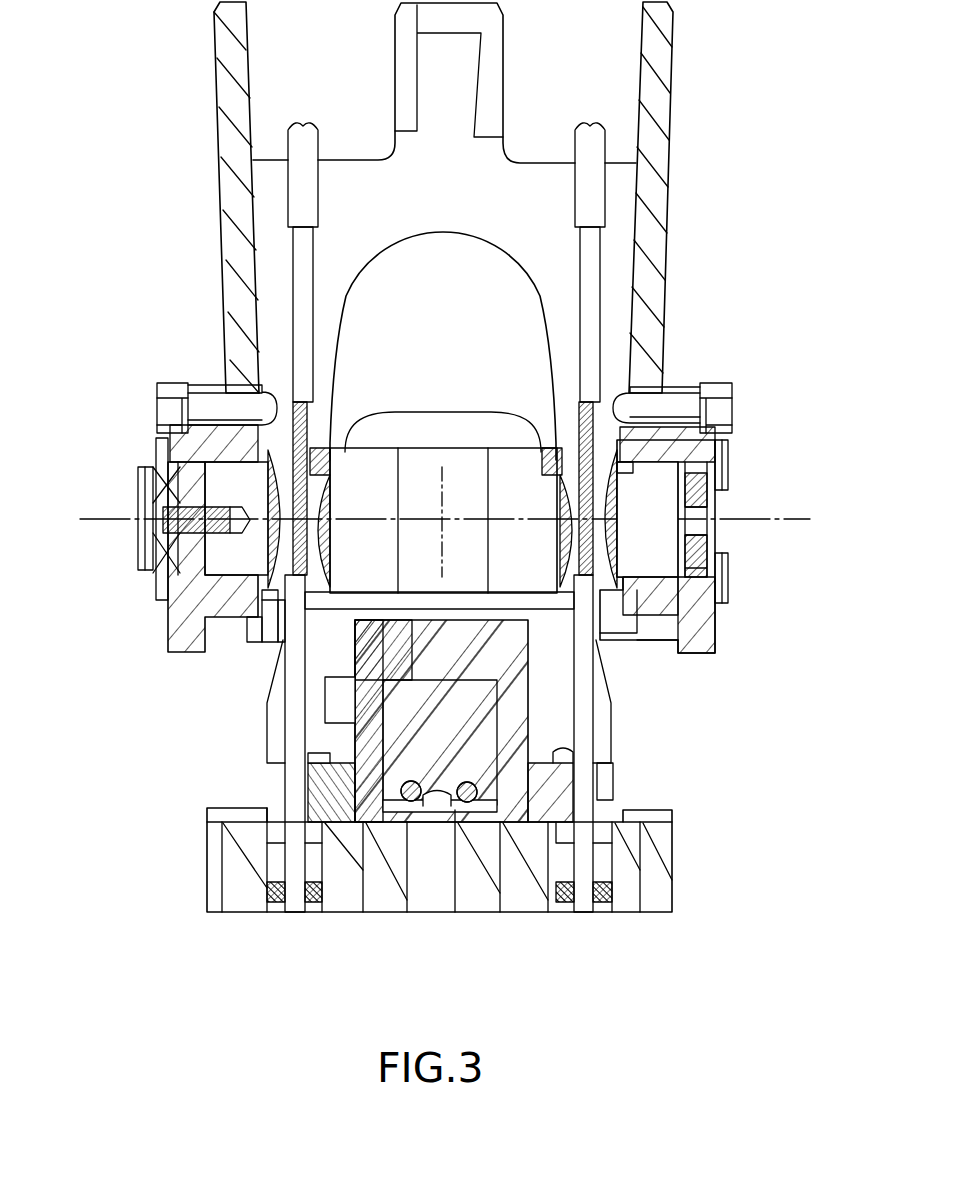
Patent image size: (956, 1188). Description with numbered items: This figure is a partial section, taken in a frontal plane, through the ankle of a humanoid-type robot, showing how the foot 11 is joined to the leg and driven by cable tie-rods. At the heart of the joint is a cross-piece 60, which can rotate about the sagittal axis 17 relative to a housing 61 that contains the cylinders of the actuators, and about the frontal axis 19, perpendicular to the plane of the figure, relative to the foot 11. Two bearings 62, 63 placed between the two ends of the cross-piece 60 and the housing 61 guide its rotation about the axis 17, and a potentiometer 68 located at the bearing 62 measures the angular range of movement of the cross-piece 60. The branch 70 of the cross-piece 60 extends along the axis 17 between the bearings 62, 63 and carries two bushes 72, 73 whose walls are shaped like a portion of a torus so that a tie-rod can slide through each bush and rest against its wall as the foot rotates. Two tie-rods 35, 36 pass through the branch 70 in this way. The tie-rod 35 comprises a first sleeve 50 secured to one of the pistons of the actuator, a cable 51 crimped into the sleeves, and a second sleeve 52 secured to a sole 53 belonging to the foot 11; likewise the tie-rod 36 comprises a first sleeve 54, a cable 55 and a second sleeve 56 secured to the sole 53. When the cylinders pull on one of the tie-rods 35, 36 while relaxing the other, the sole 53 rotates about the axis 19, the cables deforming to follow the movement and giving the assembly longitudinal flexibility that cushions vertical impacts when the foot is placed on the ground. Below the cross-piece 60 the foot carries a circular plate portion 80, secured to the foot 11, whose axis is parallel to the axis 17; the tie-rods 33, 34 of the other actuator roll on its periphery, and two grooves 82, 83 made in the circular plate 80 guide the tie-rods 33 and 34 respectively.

The foot 11 is at (697, 866).
The sagittal axis 17 is at (742, 518).
The frontal axis 19 is at (443, 520).
The tie-rod 33 is at (406, 801).
The tie-rod 34 is at (463, 820).
The tie-rod 35 is at (303, 183).
The tie-rod 36 is at (593, 190).
The first sleeve 50 is at (300, 282).
The cable 51 is at (293, 412).
The second sleeve 52 is at (297, 705).
The sole 53 is at (230, 872).
The first sleeve 54 is at (590, 285).
The cable 55 is at (593, 413).
The second sleeve 56 is at (585, 667).
The cross-piece 60 is at (417, 467).
The housing 61 is at (227, 48).
The bearing 62 is at (215, 568).
The bearing 63 is at (655, 557).
The potentiometer 68 is at (145, 520).
The branch 70 is at (370, 460).
The bush 72 is at (560, 580).
The bush 73 is at (333, 563).
The circular plate portion 80 is at (310, 750).
The groove 82 is at (383, 817).
The groove 83 is at (508, 815).